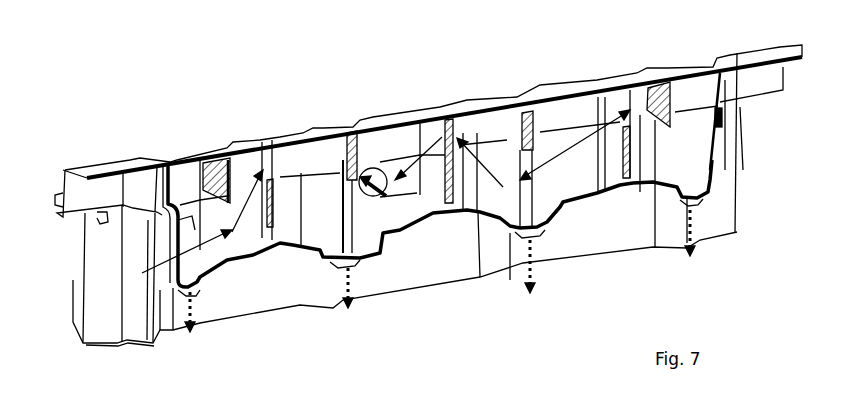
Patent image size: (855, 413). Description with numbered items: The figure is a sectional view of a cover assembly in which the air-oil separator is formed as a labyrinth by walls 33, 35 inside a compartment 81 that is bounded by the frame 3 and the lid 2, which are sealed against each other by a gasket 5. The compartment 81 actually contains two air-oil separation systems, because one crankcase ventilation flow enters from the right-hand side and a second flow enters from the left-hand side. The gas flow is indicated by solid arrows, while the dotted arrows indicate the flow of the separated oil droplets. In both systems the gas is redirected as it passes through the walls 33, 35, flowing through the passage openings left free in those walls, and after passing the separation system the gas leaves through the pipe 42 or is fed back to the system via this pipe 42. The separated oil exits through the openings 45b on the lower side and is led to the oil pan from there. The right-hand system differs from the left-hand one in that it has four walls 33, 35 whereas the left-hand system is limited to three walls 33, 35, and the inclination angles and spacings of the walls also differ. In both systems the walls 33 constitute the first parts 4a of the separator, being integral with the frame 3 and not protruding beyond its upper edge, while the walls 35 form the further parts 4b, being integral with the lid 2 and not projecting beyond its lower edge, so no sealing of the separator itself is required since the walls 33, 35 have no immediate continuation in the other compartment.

The lid 2 is at (113, 165).
The frame 3 is at (128, 320).
The first parts of the air-oil separator 4a is at (265, 215).
The further parts of the air-oil separator 4b is at (203, 177).
The gasket 5 is at (127, 212).
The walls 33 is at (222, 162).
The walls 35 is at (265, 168).
The pipe 42 is at (376, 170).
The openings 45b is at (343, 262).
The compartment 81 is at (713, 153).